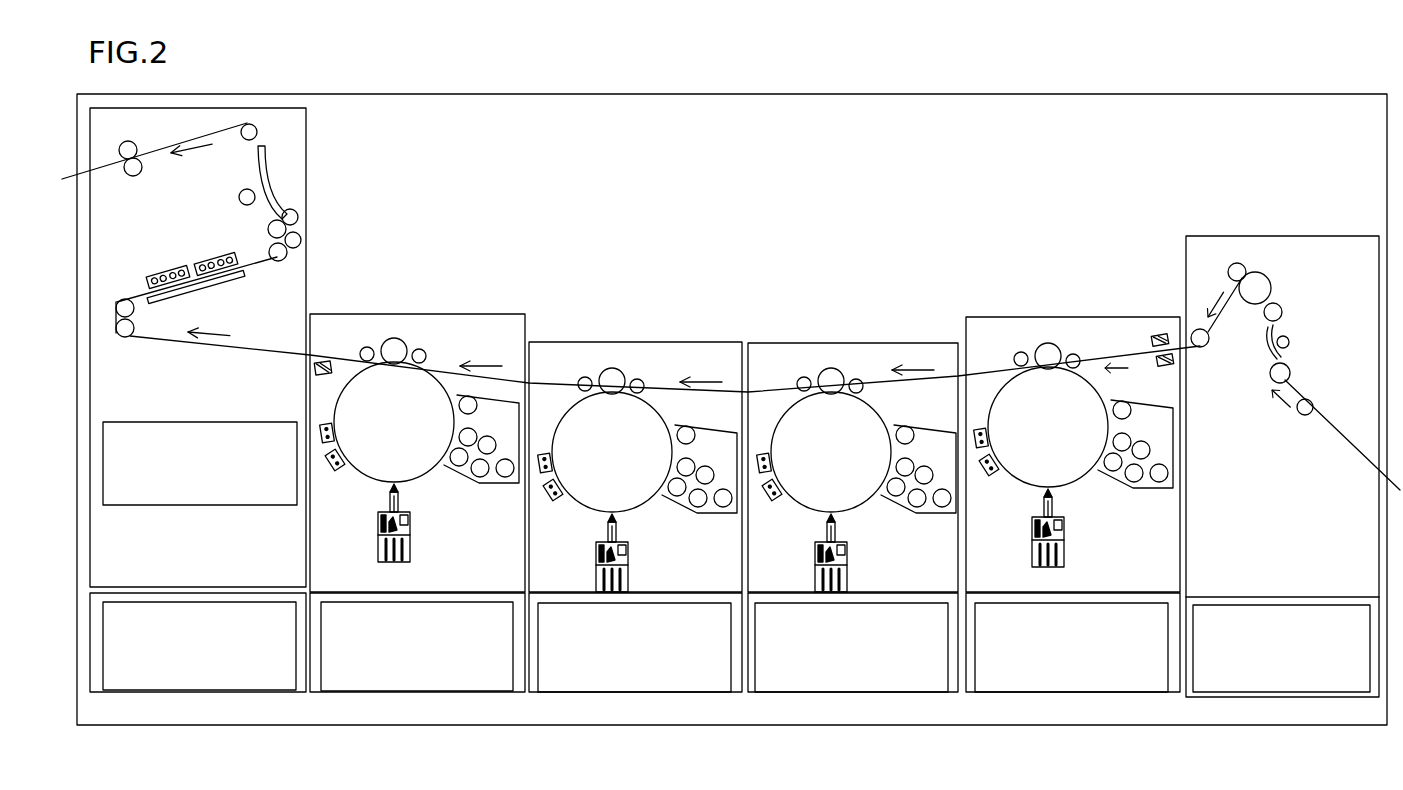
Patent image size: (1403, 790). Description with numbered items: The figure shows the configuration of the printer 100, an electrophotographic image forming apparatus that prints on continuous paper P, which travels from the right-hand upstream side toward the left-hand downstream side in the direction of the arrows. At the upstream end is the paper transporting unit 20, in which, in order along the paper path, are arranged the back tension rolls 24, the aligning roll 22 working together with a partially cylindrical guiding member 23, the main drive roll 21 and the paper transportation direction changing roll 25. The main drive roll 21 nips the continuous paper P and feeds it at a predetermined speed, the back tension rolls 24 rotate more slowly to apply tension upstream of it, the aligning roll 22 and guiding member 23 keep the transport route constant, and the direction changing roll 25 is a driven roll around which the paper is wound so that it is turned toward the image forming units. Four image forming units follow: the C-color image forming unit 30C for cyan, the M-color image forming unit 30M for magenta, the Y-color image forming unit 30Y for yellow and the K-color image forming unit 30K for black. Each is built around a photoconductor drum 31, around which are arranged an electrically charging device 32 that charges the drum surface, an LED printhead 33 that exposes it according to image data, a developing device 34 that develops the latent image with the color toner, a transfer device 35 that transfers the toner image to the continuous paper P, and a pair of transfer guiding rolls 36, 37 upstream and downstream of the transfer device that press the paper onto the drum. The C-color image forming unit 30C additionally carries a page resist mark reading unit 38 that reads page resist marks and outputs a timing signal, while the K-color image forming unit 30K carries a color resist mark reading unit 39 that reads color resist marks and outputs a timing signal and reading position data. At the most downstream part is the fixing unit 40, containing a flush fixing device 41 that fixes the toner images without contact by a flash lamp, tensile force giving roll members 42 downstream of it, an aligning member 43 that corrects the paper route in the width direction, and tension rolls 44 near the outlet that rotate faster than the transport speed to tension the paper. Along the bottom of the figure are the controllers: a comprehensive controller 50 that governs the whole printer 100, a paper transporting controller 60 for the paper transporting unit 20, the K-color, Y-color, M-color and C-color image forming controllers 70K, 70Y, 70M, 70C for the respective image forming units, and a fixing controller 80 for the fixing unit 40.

The printer 100 is at (722, 94).
The paper transporting unit 20 is at (1293, 427).
The main drive roll 21 is at (1263, 274).
The aligning roll 22 is at (1286, 337).
The guiding member 23 is at (1270, 341).
The back tension rolls 24 is at (1297, 413).
The paper transportation direction changing roll 25 is at (1207, 348).
The continuous paper P is at (1347, 450).
The K-color image forming unit 30K is at (423, 314).
The Y-color image forming unit 30Y is at (620, 342).
The M-color image forming unit 30M is at (850, 342).
The C-color image forming unit 30C is at (1073, 412).
The photoconductor drum 31 is at (1073, 427).
The electrically charging device 32 is at (988, 488).
The LED printhead 33 is at (1077, 539).
The developing device 34 is at (1135, 475).
The transfer device 35 is at (1027, 343).
The transfer guiding roll 36 is at (1096, 346).
The transfer guiding roll 37 is at (1000, 355).
The page resist mark reading unit 38 is at (1162, 352).
The color resist mark reading unit 39 is at (308, 366).
The fixing unit 40 is at (216, 347).
The flush fixing device 41 is at (188, 265).
The tensile force giving roll members 42 is at (270, 228).
The aligning member 43 is at (250, 167).
The tension rolls 44 is at (133, 142).
The comprehensive controller 50 is at (143, 598).
The paper transporting controller 60 is at (1282, 603).
The K-color image forming controller 70K is at (475, 693).
The Y-color image forming controller 70Y is at (690, 693).
The M-color image forming controller 70M is at (905, 693).
The C-color image forming controller 70C is at (1130, 693).
The fixing controller 80 is at (244, 505).